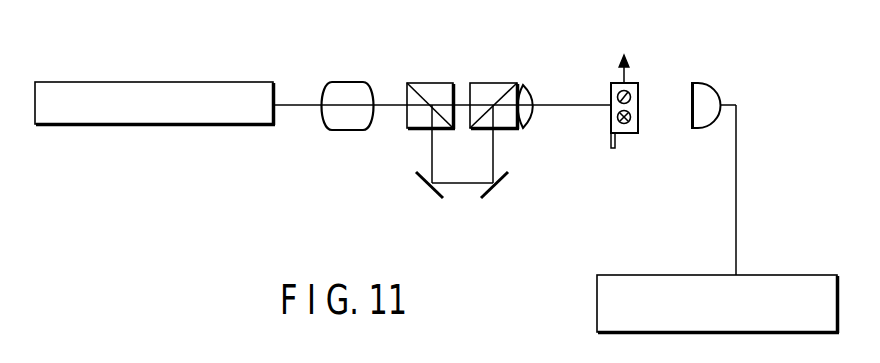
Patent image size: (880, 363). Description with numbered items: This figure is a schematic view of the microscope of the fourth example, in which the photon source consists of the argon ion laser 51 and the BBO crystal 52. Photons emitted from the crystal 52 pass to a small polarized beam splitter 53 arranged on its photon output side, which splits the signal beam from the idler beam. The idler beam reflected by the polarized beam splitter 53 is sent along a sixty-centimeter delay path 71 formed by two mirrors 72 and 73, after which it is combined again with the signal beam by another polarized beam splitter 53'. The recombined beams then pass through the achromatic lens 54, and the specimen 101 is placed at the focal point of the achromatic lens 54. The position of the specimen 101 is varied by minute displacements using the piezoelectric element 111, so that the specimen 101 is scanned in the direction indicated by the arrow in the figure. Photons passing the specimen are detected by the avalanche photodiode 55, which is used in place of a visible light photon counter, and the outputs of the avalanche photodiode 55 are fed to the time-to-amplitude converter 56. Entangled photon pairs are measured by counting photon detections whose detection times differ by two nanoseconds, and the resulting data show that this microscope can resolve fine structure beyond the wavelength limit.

The argon ion laser 51 is at (135, 82).
The BBO crystal 52 is at (343, 82).
The polarized beam splitter 53 is at (431, 82).
The polarized beam splitter 53' is at (494, 82).
The achromatic lens 54 is at (525, 129).
The avalanche photodiode 55 is at (710, 83).
The time-to-amplitude converter 56 is at (808, 275).
The delay path 71 is at (431, 148).
The mirror 72 is at (422, 184).
The mirror 73 is at (503, 186).
The specimen 101 is at (633, 133).
The piezoelectric element 111 is at (622, 133).